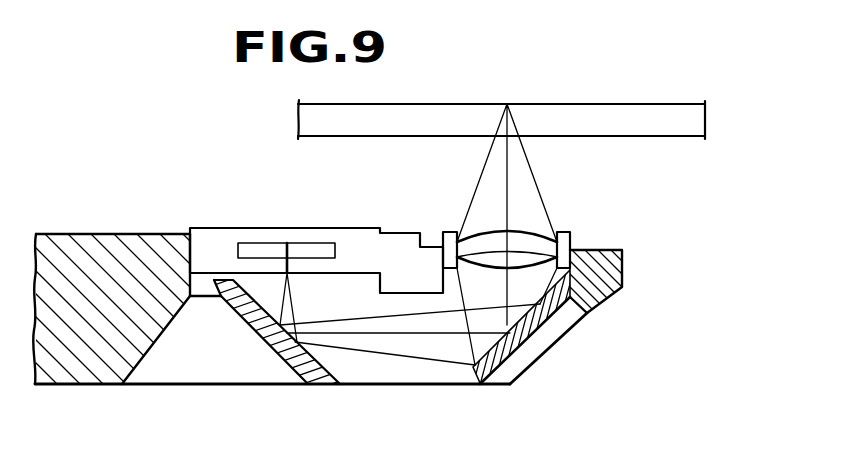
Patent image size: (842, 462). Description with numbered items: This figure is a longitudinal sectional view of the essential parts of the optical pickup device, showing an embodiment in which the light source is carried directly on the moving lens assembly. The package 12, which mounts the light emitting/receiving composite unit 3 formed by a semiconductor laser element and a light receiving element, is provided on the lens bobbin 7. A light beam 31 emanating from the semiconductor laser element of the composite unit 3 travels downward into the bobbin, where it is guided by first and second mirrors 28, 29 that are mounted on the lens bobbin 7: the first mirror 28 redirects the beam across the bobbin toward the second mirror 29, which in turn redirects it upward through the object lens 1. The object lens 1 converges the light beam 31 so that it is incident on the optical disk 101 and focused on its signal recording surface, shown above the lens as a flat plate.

The lens bobbin 7 is at (95, 248).
The package 12 is at (220, 240).
The light emitting/receiving composite unit 3 is at (292, 256).
The first mirror 28 is at (293, 353).
The light beam 31 is at (407, 357).
The second mirror 29 is at (540, 322).
The object lens 1 is at (540, 243).
The optical disk 101 is at (627, 123).